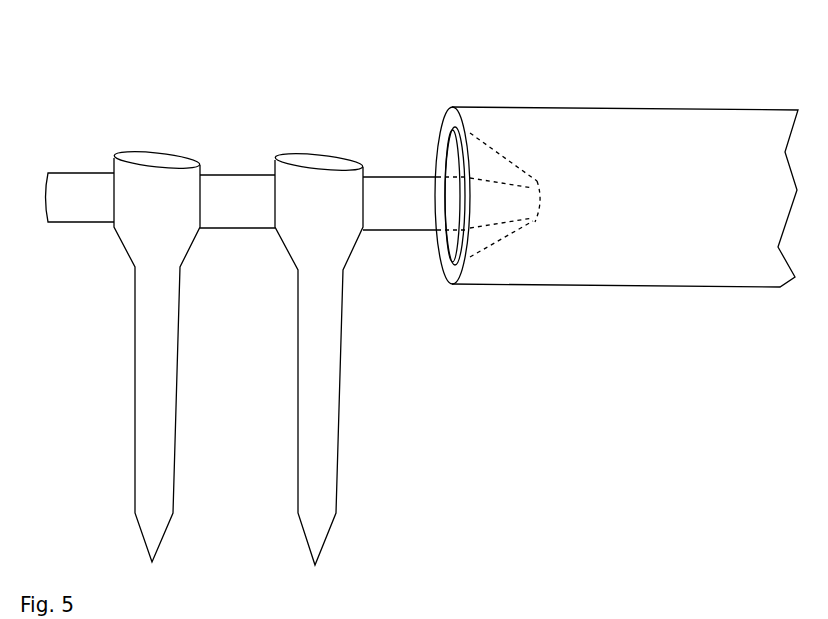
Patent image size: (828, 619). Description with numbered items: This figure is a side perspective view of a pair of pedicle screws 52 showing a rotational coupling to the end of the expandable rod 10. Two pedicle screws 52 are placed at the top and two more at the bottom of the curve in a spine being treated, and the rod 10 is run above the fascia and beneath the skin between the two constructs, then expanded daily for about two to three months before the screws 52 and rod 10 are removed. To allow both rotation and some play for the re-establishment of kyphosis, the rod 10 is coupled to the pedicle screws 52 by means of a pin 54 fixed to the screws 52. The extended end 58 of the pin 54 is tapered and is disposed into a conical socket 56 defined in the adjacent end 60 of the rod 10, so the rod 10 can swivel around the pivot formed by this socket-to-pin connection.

The rod 10 is at (627, 262).
The pedicle screws 52 is at (155, 403).
The pin 54 is at (382, 197).
The conical socket 56 is at (487, 242).
The extended end 58 is at (514, 183).
The adjacent end 60 is at (454, 86).